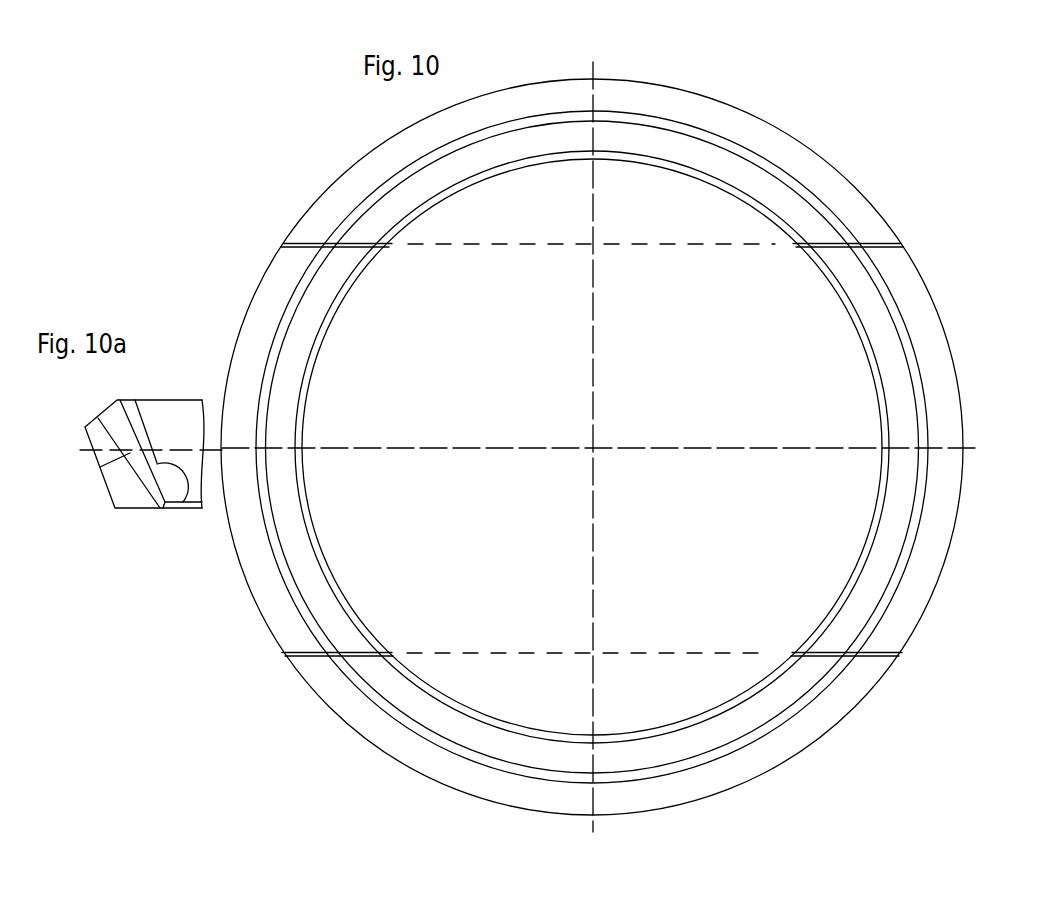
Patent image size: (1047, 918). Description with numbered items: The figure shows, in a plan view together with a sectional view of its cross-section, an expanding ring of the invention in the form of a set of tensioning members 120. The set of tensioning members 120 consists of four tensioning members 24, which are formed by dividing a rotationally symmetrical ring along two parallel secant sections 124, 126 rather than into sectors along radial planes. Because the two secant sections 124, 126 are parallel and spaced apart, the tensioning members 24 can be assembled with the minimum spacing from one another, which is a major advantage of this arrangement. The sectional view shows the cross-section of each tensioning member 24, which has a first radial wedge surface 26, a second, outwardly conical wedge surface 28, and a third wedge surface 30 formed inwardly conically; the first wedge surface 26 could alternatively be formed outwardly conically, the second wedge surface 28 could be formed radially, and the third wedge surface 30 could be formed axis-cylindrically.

In FIG. 10, the tensioning member 24 is at (698, 105).
In FIG. 10A, the first radial wedge surface 26 is at (138, 512).
In FIG. 10A, the second outwardly conical wedge surface 28 is at (103, 410).
In FIG. 10A, the third wedge surface 30 is at (183, 490).
In FIG. 10, the set of tensioning members 120 is at (615, 437).
In FIG. 10, the secant section 124 is at (716, 651).
In FIG. 10, the secant section 126 is at (672, 247).